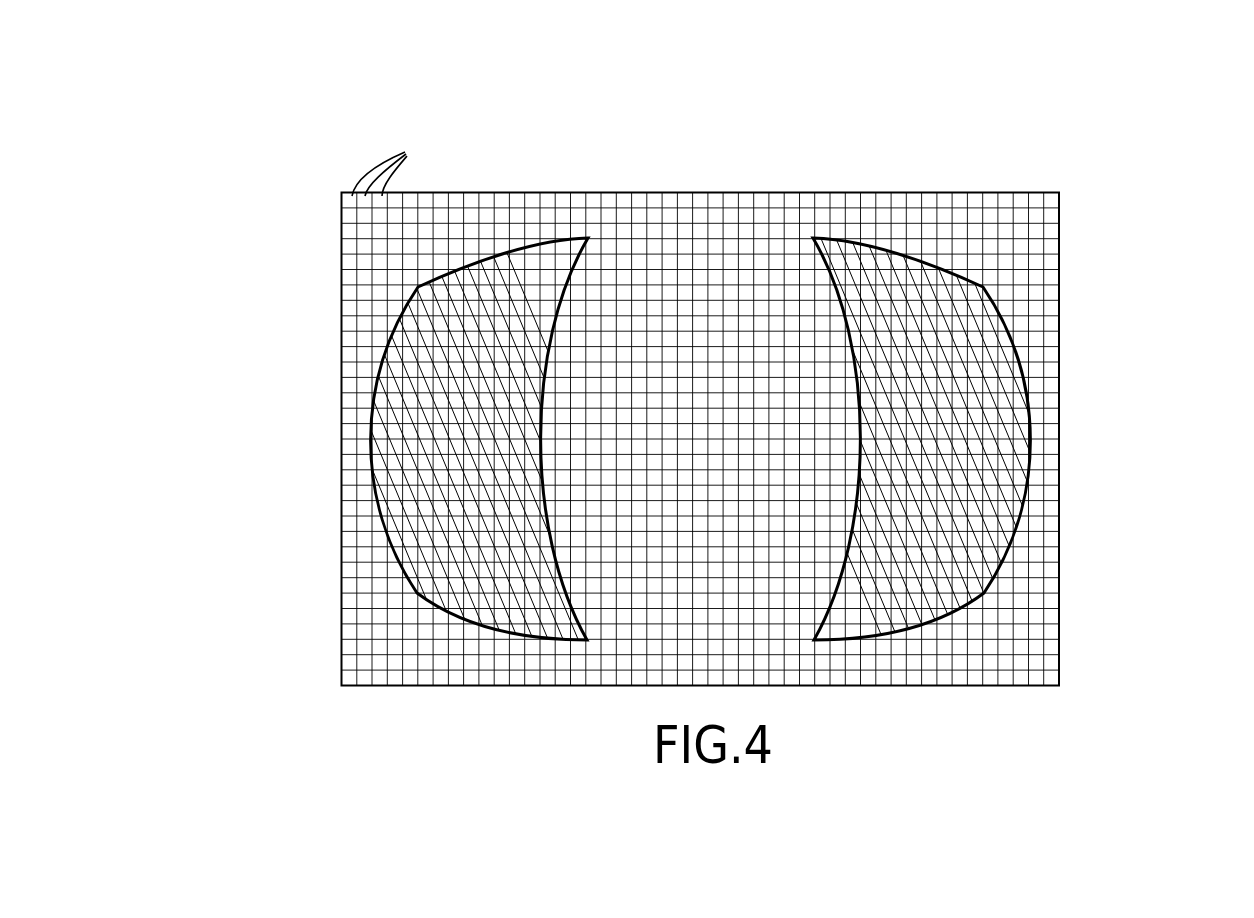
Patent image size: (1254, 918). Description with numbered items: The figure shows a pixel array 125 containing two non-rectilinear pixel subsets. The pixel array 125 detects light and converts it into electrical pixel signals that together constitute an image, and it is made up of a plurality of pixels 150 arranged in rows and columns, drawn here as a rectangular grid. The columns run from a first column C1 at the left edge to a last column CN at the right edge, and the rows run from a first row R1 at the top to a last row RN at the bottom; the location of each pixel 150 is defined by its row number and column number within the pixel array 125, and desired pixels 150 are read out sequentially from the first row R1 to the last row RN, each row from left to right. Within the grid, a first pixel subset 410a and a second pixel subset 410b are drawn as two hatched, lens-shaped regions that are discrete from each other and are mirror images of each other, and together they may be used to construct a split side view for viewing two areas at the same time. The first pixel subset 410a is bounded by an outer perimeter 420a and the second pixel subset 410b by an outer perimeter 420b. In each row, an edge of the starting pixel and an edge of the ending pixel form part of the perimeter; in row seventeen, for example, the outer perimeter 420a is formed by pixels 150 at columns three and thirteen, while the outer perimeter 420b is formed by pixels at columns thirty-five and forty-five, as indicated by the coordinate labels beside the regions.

The pixel array 125 is at (289, 134).
The pixel 150 is at (387, 161).
The first column C1 is at (347, 183).
The last column CN is at (1052, 183).
The first row R1 is at (328, 200).
The last row RN is at (328, 679).
The first pixel subset 410a is at (488, 248).
The outer perimeter of first pixel subset 420a is at (540, 228).
The second pixel subset 410b is at (852, 250).
The outer perimeter of second pixel subset 420b is at (934, 232).